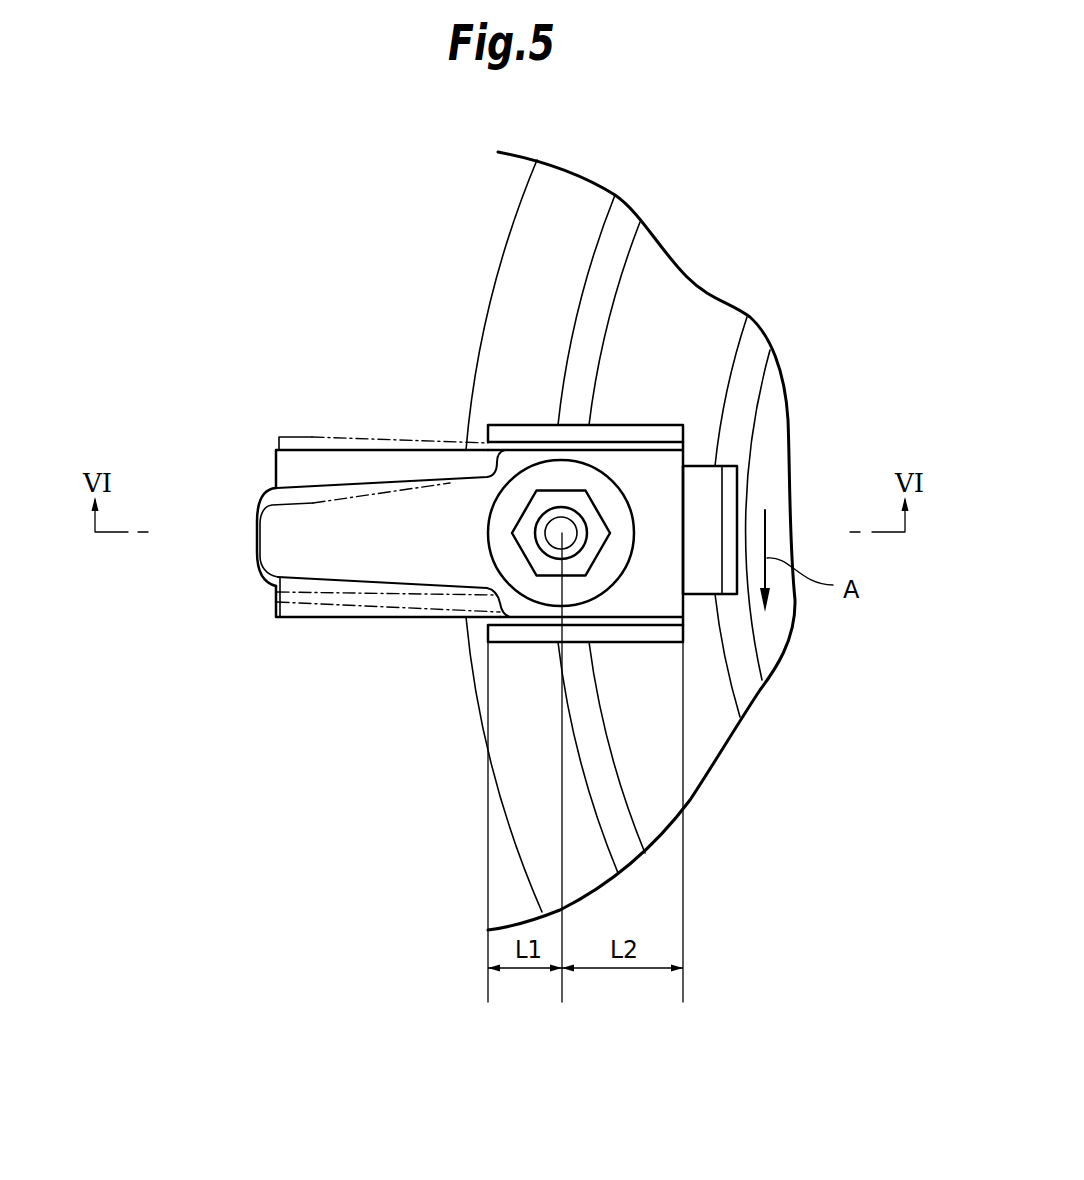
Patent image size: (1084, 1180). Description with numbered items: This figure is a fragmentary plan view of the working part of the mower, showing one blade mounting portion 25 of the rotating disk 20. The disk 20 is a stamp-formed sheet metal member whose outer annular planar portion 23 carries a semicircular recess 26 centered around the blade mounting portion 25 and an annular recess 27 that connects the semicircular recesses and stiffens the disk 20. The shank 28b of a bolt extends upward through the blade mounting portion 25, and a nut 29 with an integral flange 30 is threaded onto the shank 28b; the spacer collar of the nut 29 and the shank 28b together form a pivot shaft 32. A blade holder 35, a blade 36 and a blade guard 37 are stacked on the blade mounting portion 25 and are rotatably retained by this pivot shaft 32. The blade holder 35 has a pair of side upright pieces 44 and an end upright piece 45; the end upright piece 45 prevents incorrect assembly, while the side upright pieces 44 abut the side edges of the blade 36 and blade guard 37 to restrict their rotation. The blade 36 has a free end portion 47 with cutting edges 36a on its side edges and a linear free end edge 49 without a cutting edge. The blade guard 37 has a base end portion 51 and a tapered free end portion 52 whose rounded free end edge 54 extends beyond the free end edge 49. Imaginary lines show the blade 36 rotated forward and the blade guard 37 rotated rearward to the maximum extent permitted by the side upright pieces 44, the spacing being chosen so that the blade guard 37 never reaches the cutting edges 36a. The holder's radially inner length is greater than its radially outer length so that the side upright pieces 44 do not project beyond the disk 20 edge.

The disk 20 is at (505, 252).
The annular planar portion 23 is at (775, 400).
The blade mounting portion 25 is at (592, 422).
The semicircular recess 26 is at (590, 190).
The annular recess 27 is at (713, 303).
The shank 28b is at (546, 535).
The nut 29 is at (582, 502).
The flange 30 is at (528, 470).
The pivot shaft 32 is at (551, 486).
The blade holder 35 is at (669, 535).
The blade 36 is at (316, 620).
The cutting edge 36a is at (350, 442).
The blade guard 37 is at (256, 520).
The side upright piece 44 is at (662, 433).
The end upright piece 45 is at (728, 497).
The free end portion 47 is at (383, 457).
The free end edge 49 is at (273, 600).
The base end portion 51 is at (512, 462).
The free end portion 52 is at (313, 502).
The free end edge 54 is at (255, 545).